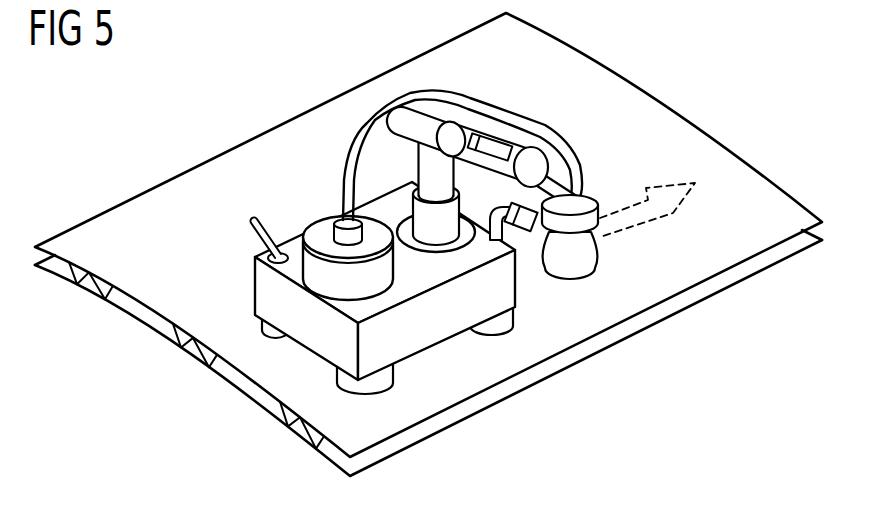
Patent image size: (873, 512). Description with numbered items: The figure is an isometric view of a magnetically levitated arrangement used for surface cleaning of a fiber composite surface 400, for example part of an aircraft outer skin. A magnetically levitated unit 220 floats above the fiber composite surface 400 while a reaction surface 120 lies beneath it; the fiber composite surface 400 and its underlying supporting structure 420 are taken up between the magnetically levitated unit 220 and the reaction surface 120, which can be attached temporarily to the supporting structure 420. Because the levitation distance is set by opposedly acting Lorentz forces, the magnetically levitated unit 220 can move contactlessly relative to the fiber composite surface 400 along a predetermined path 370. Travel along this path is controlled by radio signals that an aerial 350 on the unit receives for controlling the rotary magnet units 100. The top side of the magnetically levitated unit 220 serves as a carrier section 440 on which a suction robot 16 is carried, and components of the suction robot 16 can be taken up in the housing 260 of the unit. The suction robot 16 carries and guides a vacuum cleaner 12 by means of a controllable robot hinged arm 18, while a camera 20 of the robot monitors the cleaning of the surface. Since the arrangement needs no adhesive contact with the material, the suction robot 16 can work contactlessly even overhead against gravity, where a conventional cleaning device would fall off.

The vacuum cleaner 12 is at (322, 142).
The suction robot 16 is at (488, 254).
The robot hinged arm 18 is at (490, 130).
The camera 20 is at (510, 207).
The rotary magnet units 100 is at (262, 338).
The reaction surface 120 is at (680, 308).
The magnetically levitated unit 220 is at (200, 229).
The housing 260 is at (240, 279).
The aerial 350 is at (255, 221).
The predetermined path 370 is at (665, 190).
The fiber composite surface 400 is at (758, 185).
The supporting structure 420 is at (92, 290).
The carrier section 440 is at (392, 298).